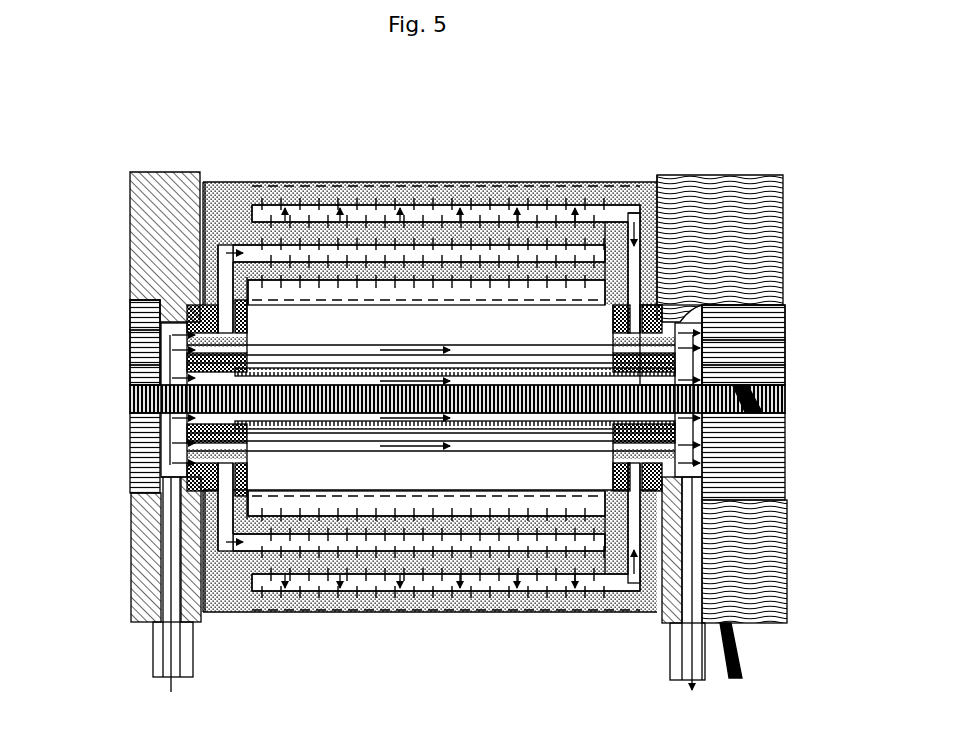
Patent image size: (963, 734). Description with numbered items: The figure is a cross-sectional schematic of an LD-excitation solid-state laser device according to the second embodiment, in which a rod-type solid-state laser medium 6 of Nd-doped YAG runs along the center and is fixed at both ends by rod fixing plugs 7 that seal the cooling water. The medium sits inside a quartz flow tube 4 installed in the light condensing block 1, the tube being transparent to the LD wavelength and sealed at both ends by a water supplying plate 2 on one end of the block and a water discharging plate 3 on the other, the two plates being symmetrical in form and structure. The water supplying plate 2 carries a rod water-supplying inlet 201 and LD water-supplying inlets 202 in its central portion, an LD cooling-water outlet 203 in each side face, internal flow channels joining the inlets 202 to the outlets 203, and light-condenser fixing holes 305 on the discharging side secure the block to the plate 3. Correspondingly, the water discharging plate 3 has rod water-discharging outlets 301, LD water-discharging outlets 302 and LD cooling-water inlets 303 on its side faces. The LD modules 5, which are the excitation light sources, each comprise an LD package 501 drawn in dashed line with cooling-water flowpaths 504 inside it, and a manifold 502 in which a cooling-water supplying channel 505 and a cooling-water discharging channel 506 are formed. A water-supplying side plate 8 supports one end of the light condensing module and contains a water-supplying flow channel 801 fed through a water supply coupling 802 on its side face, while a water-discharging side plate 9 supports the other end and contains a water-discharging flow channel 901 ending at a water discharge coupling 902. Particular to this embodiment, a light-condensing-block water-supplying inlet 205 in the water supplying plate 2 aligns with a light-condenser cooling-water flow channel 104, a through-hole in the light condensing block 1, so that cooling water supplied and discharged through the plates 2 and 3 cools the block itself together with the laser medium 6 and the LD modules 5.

The light condensing block 1 is at (463, 330).
The water supplying plate 2 is at (175, 297).
The water discharging plate 3 is at (705, 302).
The flow tube 4 is at (520, 365).
The LD modules 5 is at (432, 182).
The solid-state laser medium 6 is at (132, 405).
The rod fixing plugs 7 is at (130, 450).
The water-supplying side plate 8 is at (145, 537).
The water-discharging side plate 9 is at (770, 540).
The light-condenser cooling-water flow channel 104 is at (583, 360).
The rod water-supplying inlet 201 is at (145, 377).
The LD water-supplying inlets 202 is at (145, 322).
The LD cooling-water outlet 203 is at (205, 273).
The light-condensing-block water-supplying inlet 205 is at (145, 353).
The rod water-discharging outlets 301 is at (770, 381).
The LD water-discharging outlets 302 is at (770, 330).
The LD cooling-water inlets 303 is at (660, 270).
The light-condenser fixing holes 305 is at (770, 352).
The LD package 501 is at (310, 183).
The manifold 502 is at (625, 197).
The cooling-water flowpaths 504 is at (348, 183).
The cooling-water supplying channel 505 is at (218, 303).
The cooling-water discharging channel 506 is at (658, 198).
The water-supplying flow channel 801 is at (160, 590).
The water supply coupling 802 is at (152, 622).
The water-discharging flow channel 901 is at (760, 597).
The water discharge coupling 902 is at (713, 660).